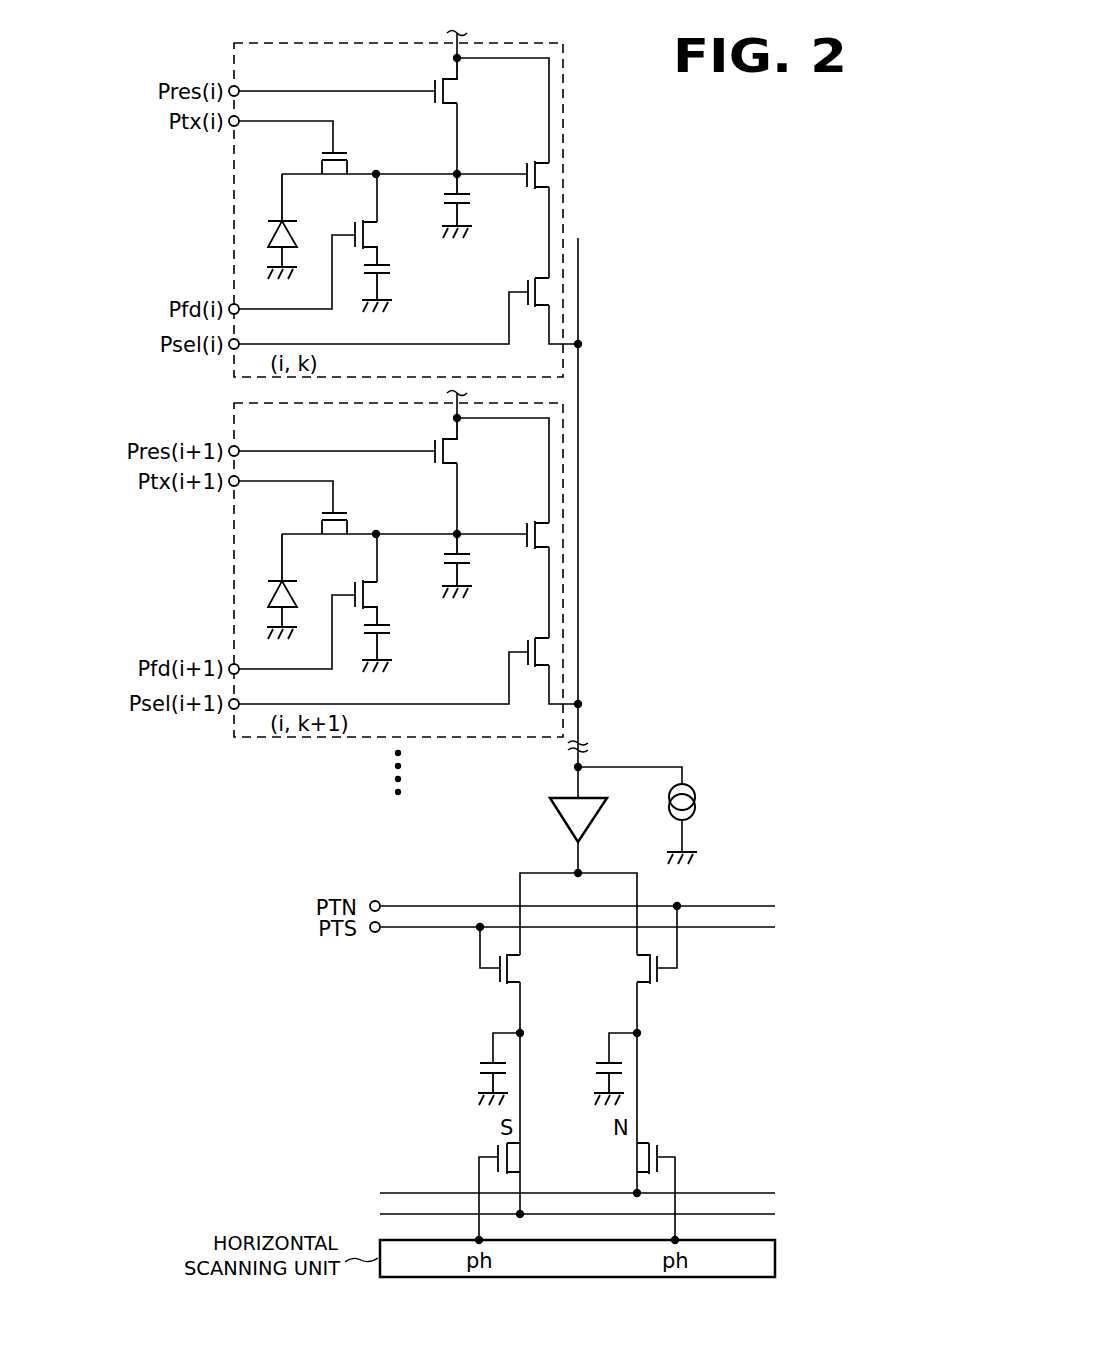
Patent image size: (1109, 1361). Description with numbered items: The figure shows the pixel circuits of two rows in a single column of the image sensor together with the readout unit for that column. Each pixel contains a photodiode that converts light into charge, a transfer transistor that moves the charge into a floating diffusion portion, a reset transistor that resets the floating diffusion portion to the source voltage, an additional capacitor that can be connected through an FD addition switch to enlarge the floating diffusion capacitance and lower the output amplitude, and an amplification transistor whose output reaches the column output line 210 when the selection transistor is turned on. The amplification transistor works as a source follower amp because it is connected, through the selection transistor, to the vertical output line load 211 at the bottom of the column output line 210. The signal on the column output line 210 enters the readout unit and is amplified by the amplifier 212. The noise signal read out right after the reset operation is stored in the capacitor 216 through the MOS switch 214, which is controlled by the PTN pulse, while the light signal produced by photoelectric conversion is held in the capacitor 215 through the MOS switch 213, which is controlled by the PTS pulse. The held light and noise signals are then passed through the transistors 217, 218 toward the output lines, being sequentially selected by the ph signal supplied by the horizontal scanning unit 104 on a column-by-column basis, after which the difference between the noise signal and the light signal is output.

The column output line 210 is at (580, 330).
The vertical output line load 211 is at (698, 803).
The amplifier 212 is at (562, 827).
The MOS switch 213 is at (521, 968).
The MOS switch 214 is at (636, 969).
The capacitor 215 is at (478, 1066).
The capacitor 216 is at (596, 1066).
The S signal transfer transistor 217 is at (520, 1156).
The N signal transfer transistor 218 is at (637, 1156).
The horizontal scanning unit 104 is at (577, 1260).